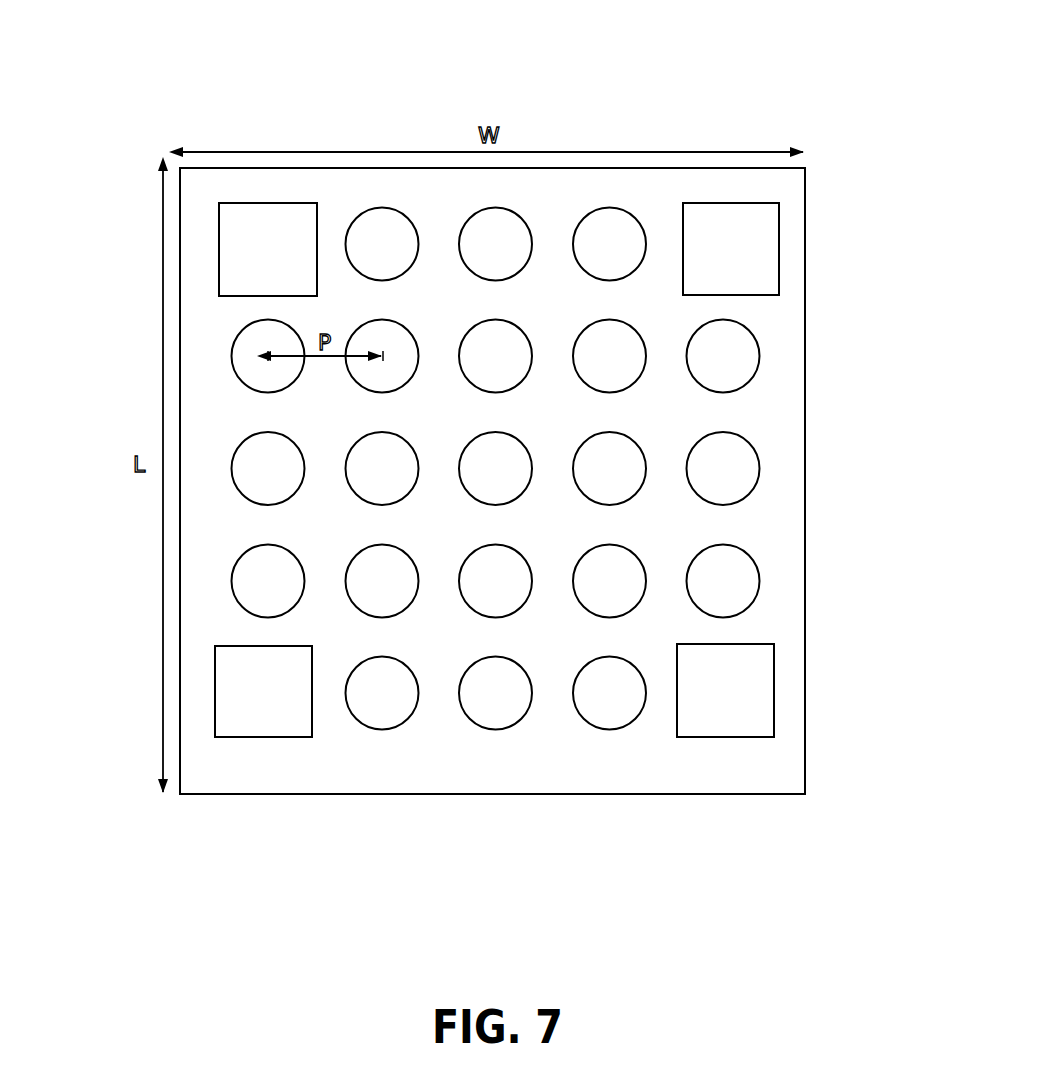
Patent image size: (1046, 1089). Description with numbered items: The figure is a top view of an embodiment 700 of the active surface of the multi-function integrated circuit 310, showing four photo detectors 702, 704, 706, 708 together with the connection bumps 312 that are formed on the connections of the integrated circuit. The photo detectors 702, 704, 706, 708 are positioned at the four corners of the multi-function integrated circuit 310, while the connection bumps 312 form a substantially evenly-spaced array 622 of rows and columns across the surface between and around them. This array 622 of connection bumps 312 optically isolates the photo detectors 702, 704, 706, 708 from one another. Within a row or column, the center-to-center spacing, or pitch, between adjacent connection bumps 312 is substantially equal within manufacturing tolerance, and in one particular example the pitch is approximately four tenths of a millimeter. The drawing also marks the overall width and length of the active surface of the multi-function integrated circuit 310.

The embodiment of an active surface 700 is at (104, 37).
The multi-function integrated circuit 310 is at (297, 795).
The connection bumps 312 is at (485, 710).
The array of connection bumps 622 is at (795, 475).
The photo detector 702 is at (267, 207).
The photo detector 704 is at (723, 206).
The photo detector 706 is at (688, 660).
The photo detector 708 is at (258, 651).